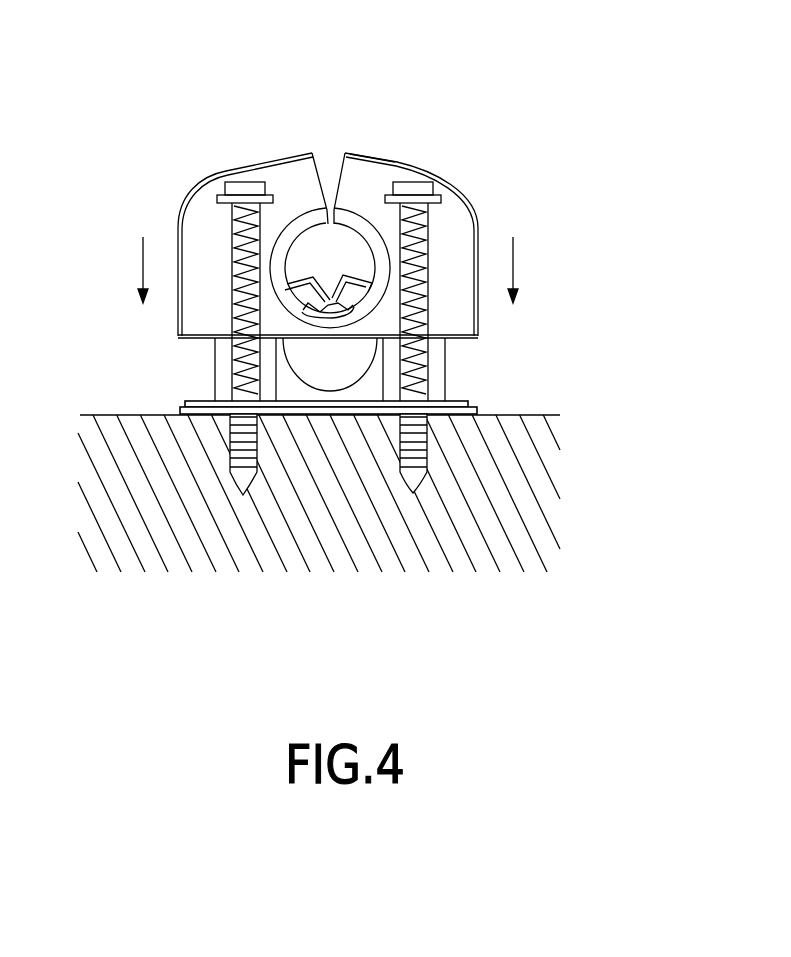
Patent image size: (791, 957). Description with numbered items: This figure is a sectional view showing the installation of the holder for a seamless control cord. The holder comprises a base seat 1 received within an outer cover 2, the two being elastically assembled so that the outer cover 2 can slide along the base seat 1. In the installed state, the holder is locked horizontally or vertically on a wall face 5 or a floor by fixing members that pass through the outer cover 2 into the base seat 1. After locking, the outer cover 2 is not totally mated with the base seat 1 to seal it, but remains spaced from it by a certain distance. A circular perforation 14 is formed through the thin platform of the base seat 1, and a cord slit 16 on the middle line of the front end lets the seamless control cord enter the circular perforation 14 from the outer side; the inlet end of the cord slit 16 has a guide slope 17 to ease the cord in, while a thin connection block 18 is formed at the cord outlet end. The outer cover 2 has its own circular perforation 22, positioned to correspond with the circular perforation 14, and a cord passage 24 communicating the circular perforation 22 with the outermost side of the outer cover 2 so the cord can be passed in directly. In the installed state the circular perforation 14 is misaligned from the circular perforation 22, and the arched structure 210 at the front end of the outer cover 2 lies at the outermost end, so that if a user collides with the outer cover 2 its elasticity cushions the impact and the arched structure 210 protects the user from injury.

The base seat 1 is at (143, 192).
The outer cover 2 is at (453, 230).
The wall face 5 is at (510, 482).
The circular perforation 14 is at (338, 360).
The cord slit 16 is at (318, 290).
The guide slope 17 is at (340, 285).
The thin connection block 18 is at (367, 290).
The circular perforation 22 is at (315, 253).
The cord passage 24 is at (330, 172).
The arched structure 210 is at (393, 157).